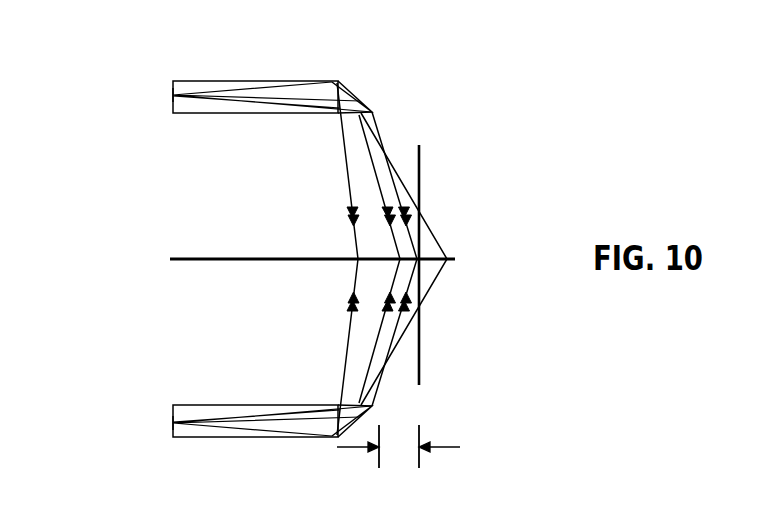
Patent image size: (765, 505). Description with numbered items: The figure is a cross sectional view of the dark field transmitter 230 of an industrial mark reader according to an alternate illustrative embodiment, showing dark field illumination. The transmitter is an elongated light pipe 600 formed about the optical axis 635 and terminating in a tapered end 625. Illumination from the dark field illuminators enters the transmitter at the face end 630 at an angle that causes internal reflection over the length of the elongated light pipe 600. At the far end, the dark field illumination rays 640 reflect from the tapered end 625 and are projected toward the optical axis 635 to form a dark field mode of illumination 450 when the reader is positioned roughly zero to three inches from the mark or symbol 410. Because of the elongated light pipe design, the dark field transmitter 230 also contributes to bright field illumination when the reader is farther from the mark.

The dark field transmitter 230 is at (526, 76).
The mark or symbol 410 is at (420, 170).
The dark field mode of illumination 450 is at (441, 446).
The elongated light pipe 600 is at (196, 80).
The tapered end 625 is at (345, 88).
The face end 630 is at (172, 94).
The optical axis 635 is at (189, 258).
The dark field illumination rays 640 is at (341, 152).